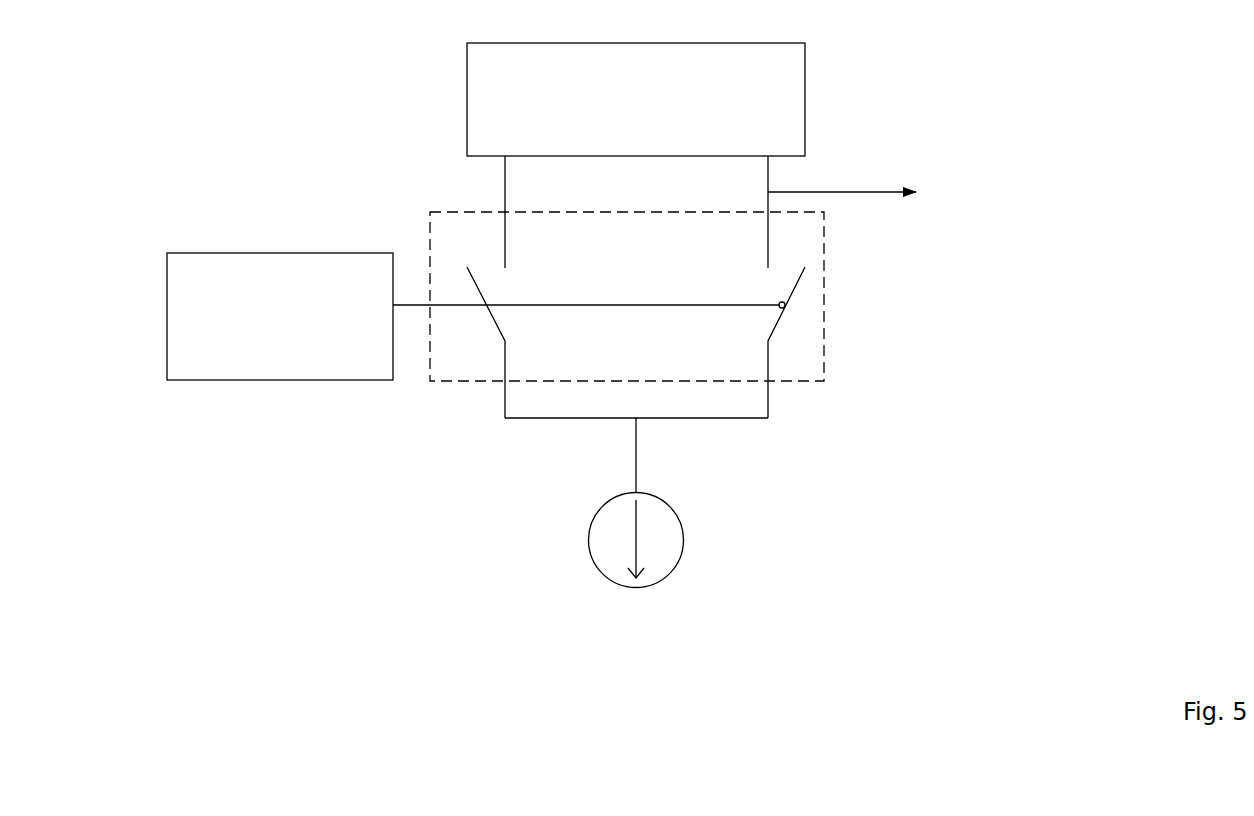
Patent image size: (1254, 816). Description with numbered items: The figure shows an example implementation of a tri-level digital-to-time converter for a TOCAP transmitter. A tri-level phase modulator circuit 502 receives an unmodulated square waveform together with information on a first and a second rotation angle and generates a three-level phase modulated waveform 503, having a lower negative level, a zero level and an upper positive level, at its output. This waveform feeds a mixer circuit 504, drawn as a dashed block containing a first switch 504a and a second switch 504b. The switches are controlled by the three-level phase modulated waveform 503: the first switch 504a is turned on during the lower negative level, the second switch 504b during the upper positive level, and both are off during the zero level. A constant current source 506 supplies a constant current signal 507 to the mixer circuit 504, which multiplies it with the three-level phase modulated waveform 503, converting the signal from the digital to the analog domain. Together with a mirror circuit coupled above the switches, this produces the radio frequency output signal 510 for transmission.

The tri-level phase modulator circuit 502 is at (280, 316).
The three-level phase modulated waveform 503 is at (634, 309).
The mixer circuit 504 is at (826, 282).
The first switch 504a is at (507, 284).
The second switch 504b is at (764, 284).
The constant current source 506 is at (686, 544).
The constant current signal 507 is at (633, 471).
The radio frequency (RF) output signal 510 is at (828, 189).